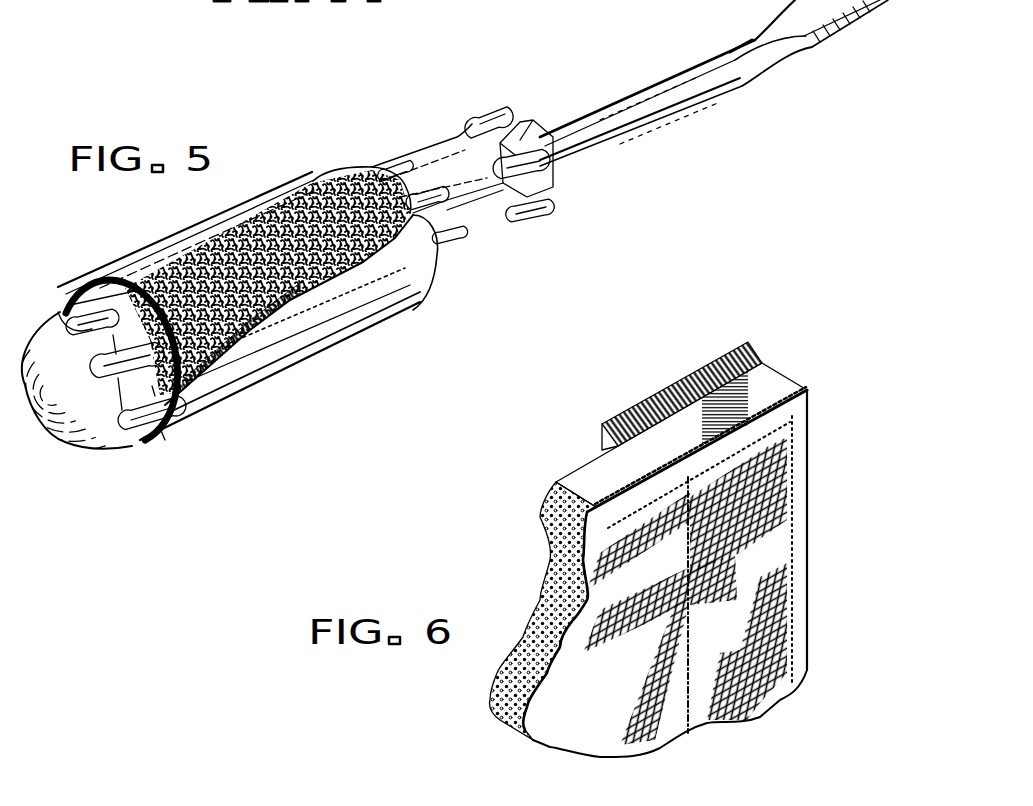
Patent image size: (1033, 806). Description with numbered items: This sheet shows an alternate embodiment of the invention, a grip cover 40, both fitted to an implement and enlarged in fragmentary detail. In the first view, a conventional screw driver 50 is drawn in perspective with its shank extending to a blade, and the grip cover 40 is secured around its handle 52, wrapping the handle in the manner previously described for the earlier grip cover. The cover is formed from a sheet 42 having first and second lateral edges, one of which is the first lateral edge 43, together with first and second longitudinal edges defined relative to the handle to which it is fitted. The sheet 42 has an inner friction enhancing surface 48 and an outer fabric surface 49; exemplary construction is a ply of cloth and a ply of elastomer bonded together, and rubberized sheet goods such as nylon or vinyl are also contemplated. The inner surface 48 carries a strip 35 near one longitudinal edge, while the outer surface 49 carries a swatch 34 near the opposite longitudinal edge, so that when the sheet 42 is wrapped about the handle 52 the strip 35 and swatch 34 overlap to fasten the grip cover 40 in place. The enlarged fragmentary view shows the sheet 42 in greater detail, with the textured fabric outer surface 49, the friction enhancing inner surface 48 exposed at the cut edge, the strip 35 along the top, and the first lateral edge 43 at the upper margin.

In FIG. 5, the swatch 34 is at (317, 205).
In FIG. 5, the strip 35 is at (188, 400).
In FIG. 6, the strip 35 is at (683, 380).
In FIG. 5, the grip cover 40 is at (337, 351).
In FIG. 6, the grip cover 40 is at (549, 541).
In FIG. 6, the sheet 42 is at (540, 740).
In FIG. 6, the first lateral edge 43 is at (778, 380).
In FIG. 6, the inner surface 48 is at (540, 600).
In FIG. 6, the outer surface 49 is at (690, 730).
In FIG. 5, the screw driver 50 is at (618, 94).
In FIG. 5, the handle 52 is at (435, 142).